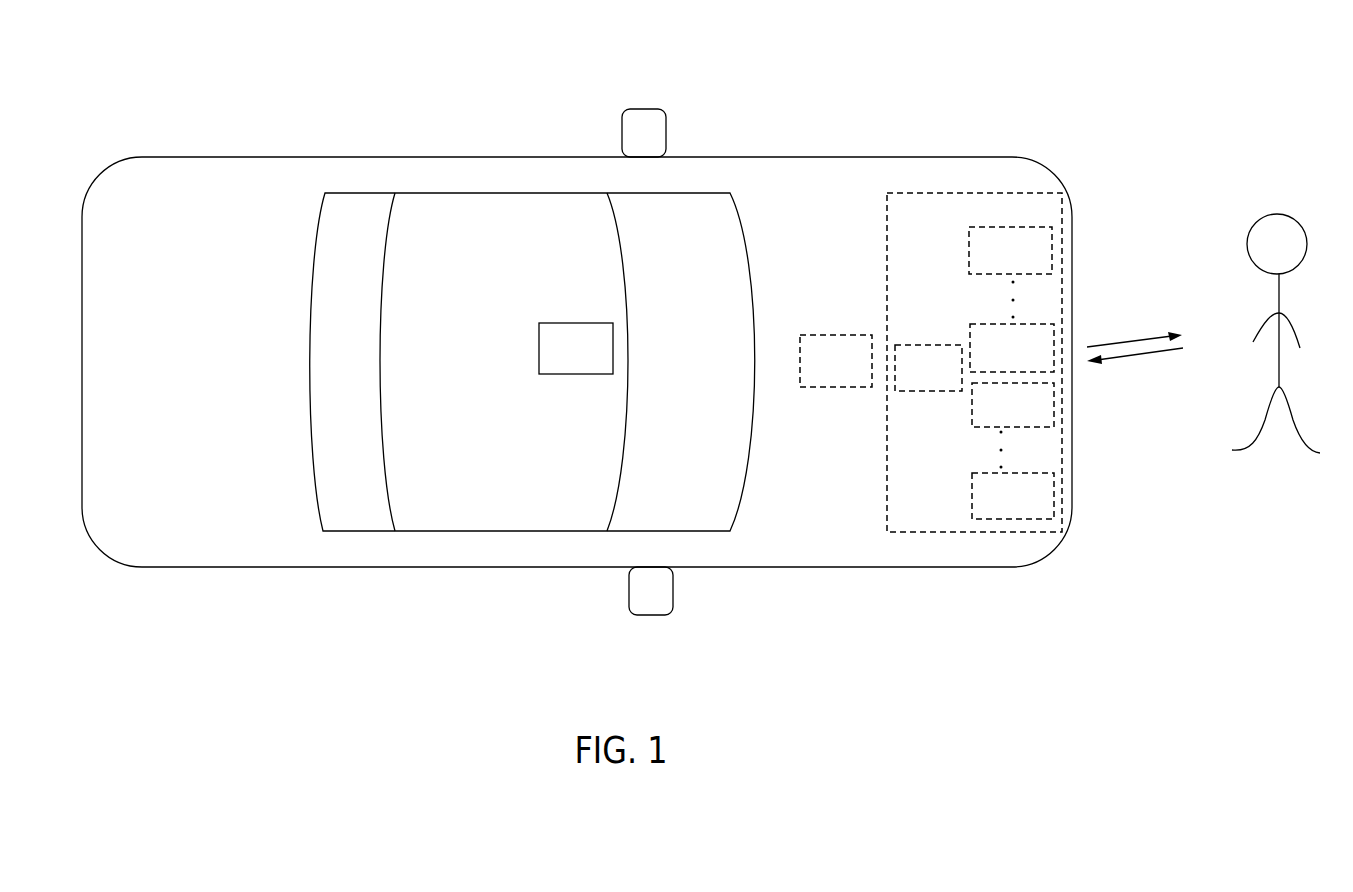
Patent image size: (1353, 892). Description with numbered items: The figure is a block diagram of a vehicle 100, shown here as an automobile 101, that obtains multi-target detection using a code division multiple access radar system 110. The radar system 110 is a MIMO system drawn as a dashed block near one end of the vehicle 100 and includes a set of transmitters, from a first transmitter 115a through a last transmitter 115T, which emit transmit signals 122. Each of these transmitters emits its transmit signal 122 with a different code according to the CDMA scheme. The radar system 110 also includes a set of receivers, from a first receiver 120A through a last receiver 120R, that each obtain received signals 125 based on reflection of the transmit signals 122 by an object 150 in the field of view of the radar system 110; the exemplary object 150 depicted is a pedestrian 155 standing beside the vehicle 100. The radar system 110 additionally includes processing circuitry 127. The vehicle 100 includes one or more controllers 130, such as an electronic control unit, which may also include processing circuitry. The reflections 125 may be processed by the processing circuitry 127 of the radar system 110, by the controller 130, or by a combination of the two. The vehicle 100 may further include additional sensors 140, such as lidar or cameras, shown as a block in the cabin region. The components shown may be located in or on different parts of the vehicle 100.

The vehicle 100 is at (577, 362).
The automobile 101 is at (311, 158).
The CDMA radar system 110 is at (902, 232).
The transmitter 115a is at (982, 267).
The transmitter 115T is at (984, 365).
The receiver 120A is at (984, 418).
The receiver 120R is at (984, 513).
The transmit signal 122 is at (1135, 341).
The received signal 125 is at (1136, 355).
The processing circuitry 127 is at (907, 383).
The controller 130 is at (813, 377).
The additional sensors 140 is at (553, 365).
The object 150 is at (1251, 292).
The pedestrian 155 is at (1247, 186).